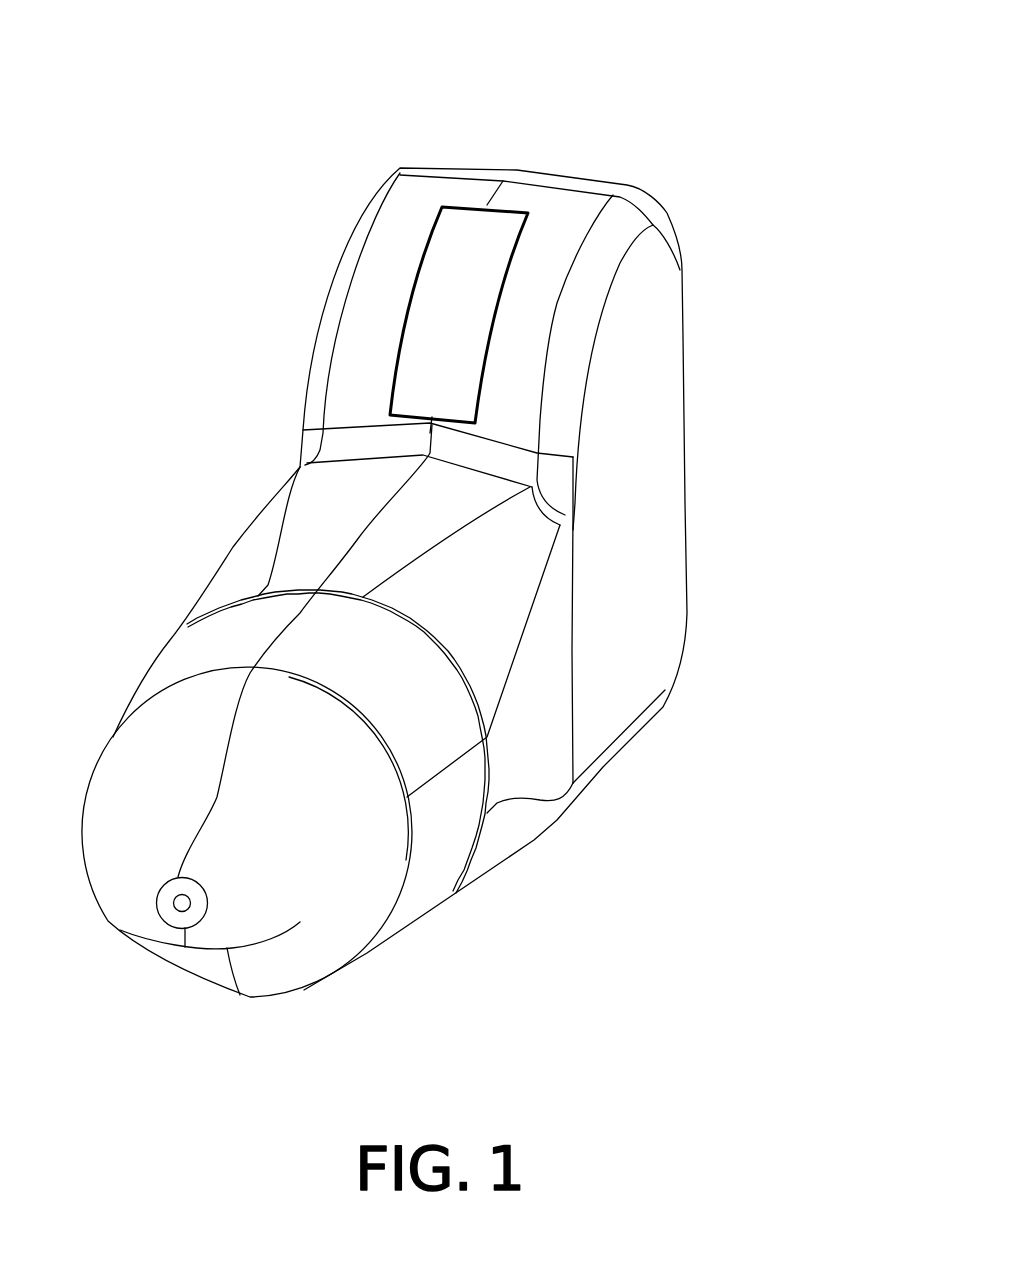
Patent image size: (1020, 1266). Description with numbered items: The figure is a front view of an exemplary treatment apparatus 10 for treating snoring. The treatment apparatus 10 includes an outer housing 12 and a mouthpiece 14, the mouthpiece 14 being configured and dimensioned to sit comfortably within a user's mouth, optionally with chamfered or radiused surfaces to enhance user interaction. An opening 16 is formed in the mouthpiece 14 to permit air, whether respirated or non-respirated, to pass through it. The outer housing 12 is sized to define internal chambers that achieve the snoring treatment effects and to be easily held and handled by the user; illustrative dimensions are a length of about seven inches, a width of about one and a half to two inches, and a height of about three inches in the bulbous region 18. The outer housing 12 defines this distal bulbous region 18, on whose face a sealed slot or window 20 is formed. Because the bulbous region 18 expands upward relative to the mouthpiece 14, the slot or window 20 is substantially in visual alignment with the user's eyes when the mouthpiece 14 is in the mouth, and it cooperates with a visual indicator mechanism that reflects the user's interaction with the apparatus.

The treatment apparatus 10 is at (724, 407).
The outer housing 12 is at (625, 620).
The mouthpiece 14 is at (240, 888).
The opening 16 is at (175, 908).
The bulbous region 18 is at (643, 270).
The slot or window 20 is at (473, 222).